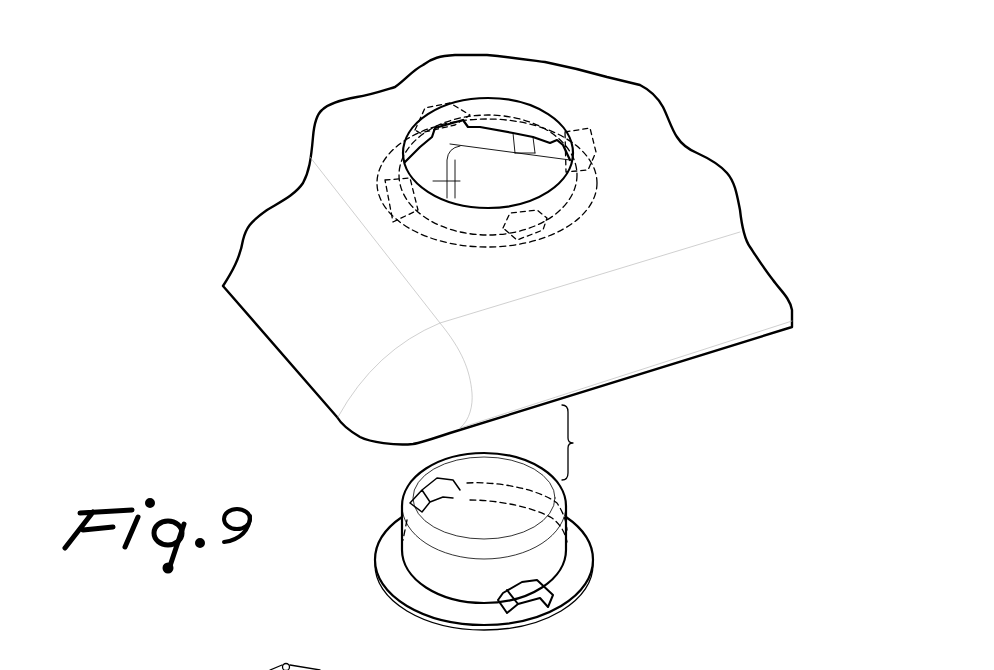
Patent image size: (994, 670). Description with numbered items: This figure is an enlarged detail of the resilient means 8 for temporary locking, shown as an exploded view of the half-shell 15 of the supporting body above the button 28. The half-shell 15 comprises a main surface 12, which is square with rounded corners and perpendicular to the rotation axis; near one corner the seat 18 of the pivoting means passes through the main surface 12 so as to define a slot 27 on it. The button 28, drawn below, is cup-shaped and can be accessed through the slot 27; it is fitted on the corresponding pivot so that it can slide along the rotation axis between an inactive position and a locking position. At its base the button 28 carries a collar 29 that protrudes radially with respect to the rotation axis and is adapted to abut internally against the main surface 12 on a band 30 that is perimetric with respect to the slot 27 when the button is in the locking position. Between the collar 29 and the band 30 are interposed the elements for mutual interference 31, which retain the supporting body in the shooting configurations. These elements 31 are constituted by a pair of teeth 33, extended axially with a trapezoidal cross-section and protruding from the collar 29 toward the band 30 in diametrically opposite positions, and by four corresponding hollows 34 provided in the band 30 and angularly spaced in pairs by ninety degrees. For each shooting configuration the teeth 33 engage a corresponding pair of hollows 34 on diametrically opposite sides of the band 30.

The resilient means 8 is at (634, 513).
The main surface 12 is at (613, 117).
The half-shell 15 is at (732, 288).
The seat 18 is at (442, 183).
The slot 27 is at (550, 122).
The button 28 is at (517, 482).
The collar 29 is at (578, 205).
The band 30 is at (447, 247).
The elements for mutual interference 31 is at (386, 208).
The teeth 33 is at (420, 472).
The hollows 34 is at (443, 110).